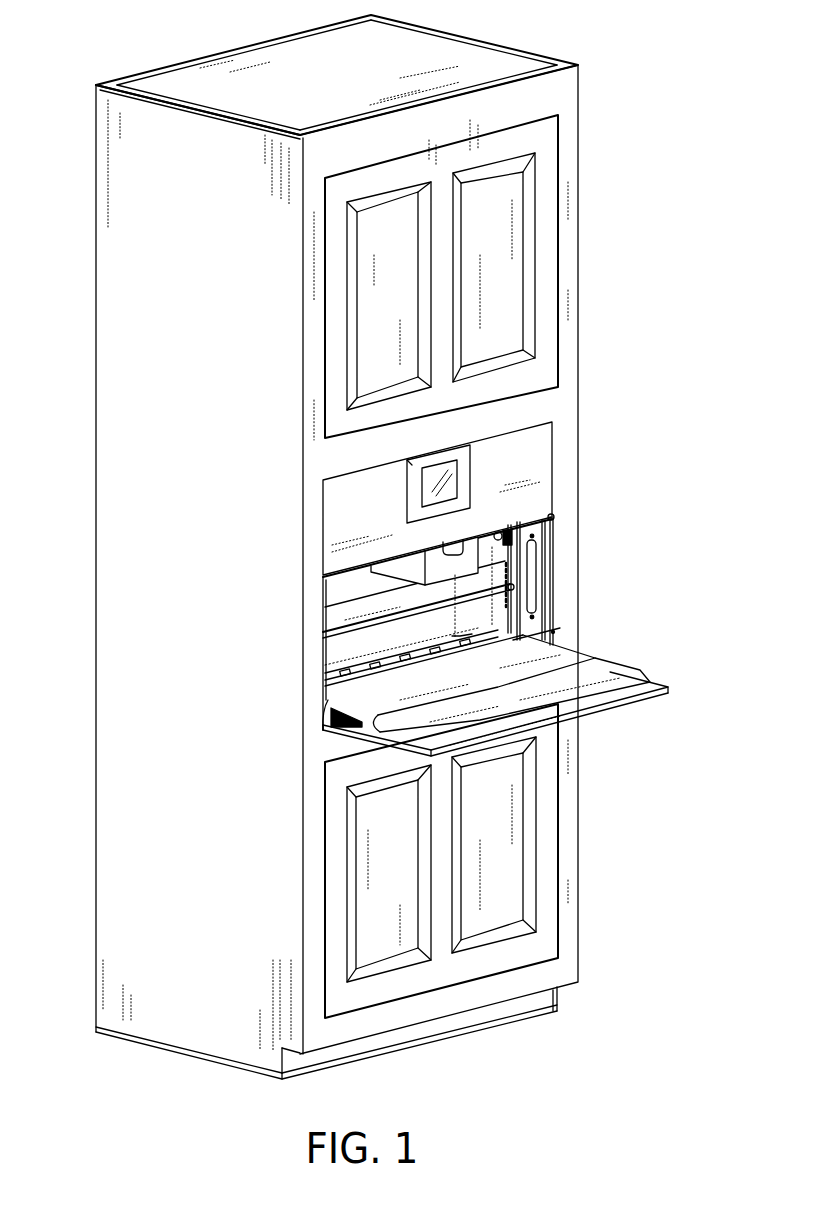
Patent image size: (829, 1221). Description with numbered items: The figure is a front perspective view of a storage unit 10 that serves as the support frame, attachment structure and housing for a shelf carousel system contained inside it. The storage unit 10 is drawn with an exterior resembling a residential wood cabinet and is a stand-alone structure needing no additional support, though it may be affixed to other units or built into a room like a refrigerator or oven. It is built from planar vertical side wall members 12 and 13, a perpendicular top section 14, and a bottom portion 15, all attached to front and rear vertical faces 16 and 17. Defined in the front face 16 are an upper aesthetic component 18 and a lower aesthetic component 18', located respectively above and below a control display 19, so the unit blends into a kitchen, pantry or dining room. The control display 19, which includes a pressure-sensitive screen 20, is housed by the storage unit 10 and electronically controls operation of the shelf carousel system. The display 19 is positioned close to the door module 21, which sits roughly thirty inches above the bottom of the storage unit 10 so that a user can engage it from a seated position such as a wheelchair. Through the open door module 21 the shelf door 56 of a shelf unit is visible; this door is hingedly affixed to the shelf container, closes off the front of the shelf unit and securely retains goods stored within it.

The storage unit 10 is at (110, 260).
The side wall member 12 is at (102, 121).
The side wall member 13 is at (492, 56).
The top section 14 is at (272, 72).
The bottom portion 15 is at (185, 1051).
The front face 16 is at (571, 125).
The rear face 17 is at (152, 82).
The upper aesthetic component 18 is at (476, 276).
The lower aesthetic component 18' is at (477, 861).
The control display 19 is at (471, 469).
The pressure-sensitive screen 20 is at (430, 488).
The door module 21 is at (610, 672).
The shelf door 56 is at (541, 657).